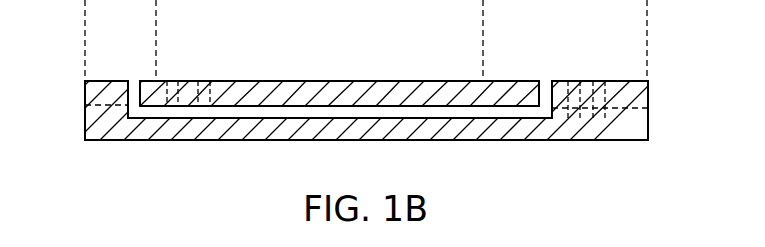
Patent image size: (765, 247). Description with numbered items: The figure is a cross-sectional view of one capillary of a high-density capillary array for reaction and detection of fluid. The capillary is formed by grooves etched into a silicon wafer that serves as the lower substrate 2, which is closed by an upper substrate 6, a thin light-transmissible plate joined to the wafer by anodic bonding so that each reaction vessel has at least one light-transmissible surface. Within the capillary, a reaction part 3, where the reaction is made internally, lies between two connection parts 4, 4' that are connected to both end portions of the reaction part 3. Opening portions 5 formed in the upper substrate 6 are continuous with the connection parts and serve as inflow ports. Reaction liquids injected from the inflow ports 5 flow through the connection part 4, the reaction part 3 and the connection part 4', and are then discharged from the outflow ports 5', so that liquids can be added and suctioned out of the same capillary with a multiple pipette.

The lower substrate 2 is at (633, 117).
The reaction part 3 is at (350, 110).
The connection part 4 is at (446, 144).
The connection part 4' is at (234, 144).
The opening portion (inflow port) 5 is at (574, 72).
The outflow port 5' is at (169, 73).
The upper substrate 6 is at (107, 97).